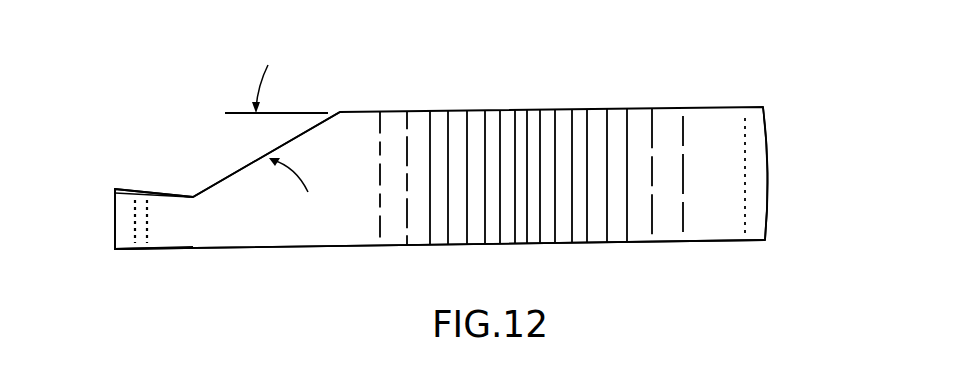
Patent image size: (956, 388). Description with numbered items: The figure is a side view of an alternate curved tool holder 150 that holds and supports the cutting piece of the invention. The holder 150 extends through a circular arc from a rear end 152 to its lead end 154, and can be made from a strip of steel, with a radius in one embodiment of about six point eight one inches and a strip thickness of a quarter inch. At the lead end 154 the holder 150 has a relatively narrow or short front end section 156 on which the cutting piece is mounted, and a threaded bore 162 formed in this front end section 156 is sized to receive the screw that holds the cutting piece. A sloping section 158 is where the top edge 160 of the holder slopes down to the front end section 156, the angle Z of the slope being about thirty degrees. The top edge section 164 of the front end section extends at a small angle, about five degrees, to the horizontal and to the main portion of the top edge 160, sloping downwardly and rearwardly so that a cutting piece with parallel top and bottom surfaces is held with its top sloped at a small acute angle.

The curved tool holder 150 is at (433, 155).
The rear end 152 is at (770, 128).
The lead end 154 is at (115, 221).
The front end section 156 is at (166, 233).
The sloping section 158 is at (257, 183).
The top edge 160 is at (467, 110).
The threaded bore 162 is at (143, 232).
The top edge section 164 is at (128, 198).